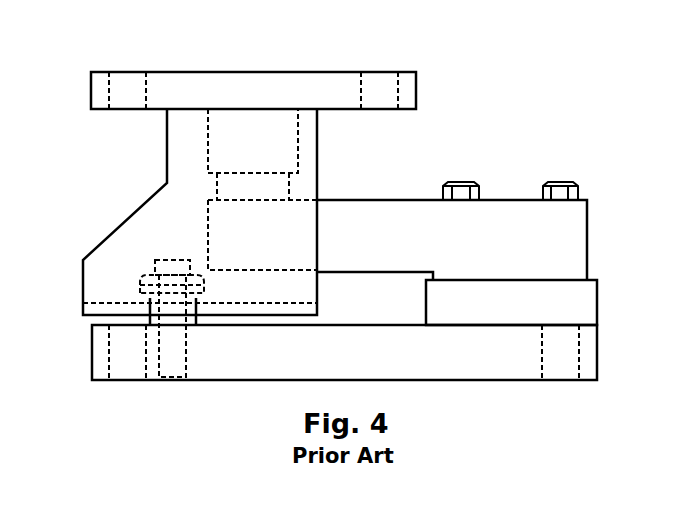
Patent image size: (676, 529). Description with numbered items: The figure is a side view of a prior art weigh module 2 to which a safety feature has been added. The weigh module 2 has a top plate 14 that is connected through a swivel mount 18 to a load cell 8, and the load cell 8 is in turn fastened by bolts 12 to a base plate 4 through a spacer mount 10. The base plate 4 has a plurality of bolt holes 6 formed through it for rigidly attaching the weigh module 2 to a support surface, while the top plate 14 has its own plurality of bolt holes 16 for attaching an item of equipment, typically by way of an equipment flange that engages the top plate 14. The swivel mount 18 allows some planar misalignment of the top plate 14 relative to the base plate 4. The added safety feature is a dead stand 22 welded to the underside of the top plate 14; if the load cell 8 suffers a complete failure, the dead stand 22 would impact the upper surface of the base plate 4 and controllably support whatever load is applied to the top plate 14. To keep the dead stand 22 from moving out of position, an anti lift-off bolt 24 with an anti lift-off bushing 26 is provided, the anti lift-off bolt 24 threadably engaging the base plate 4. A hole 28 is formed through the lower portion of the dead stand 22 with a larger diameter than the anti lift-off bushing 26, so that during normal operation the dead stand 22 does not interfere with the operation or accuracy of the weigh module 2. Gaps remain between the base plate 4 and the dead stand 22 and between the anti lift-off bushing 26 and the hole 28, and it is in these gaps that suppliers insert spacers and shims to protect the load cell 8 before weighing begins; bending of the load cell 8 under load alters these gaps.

The weigh module 2 is at (611, 121).
The base plate 4 is at (253, 382).
The bolt holes 6 is at (145, 360).
The load cell 8 is at (376, 272).
The spacer mount 10 is at (597, 311).
The bolts 12 is at (555, 182).
The top plate 14 is at (232, 70).
The bolt holes 16 is at (146, 85).
The swivel mount 18 is at (298, 158).
The dead stand 22 is at (165, 178).
The anti lift-off bolt 24 is at (165, 259).
The anti lift-off bushing 26 is at (143, 287).
The hole 28 is at (198, 313).